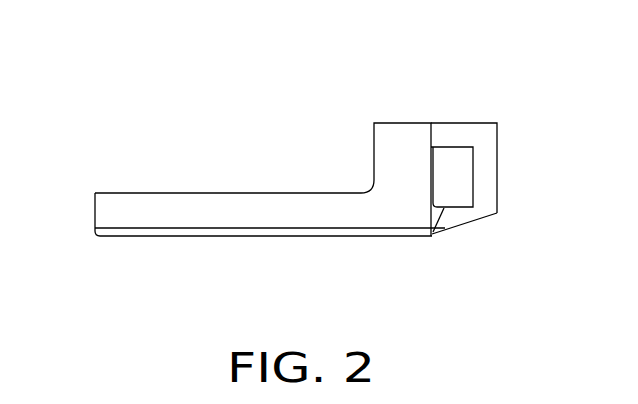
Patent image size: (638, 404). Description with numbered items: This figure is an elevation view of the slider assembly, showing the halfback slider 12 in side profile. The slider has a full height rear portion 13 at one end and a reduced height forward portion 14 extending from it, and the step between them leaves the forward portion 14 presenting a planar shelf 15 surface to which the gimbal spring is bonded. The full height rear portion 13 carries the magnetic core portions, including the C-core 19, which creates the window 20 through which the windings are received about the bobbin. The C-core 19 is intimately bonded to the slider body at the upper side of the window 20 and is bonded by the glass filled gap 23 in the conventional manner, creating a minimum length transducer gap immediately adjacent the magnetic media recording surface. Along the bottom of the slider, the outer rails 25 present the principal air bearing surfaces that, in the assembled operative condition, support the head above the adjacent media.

The halfback slider 12 is at (95, 213).
The full height rear portion 13 is at (395, 123).
The reduced height forward portion 14 is at (165, 193).
The planar shelf 15 is at (265, 193).
The C-core 19 is at (465, 123).
The window 20 is at (473, 160).
The glass filled gap 23 is at (431, 235).
The outer rails 25 is at (325, 237).